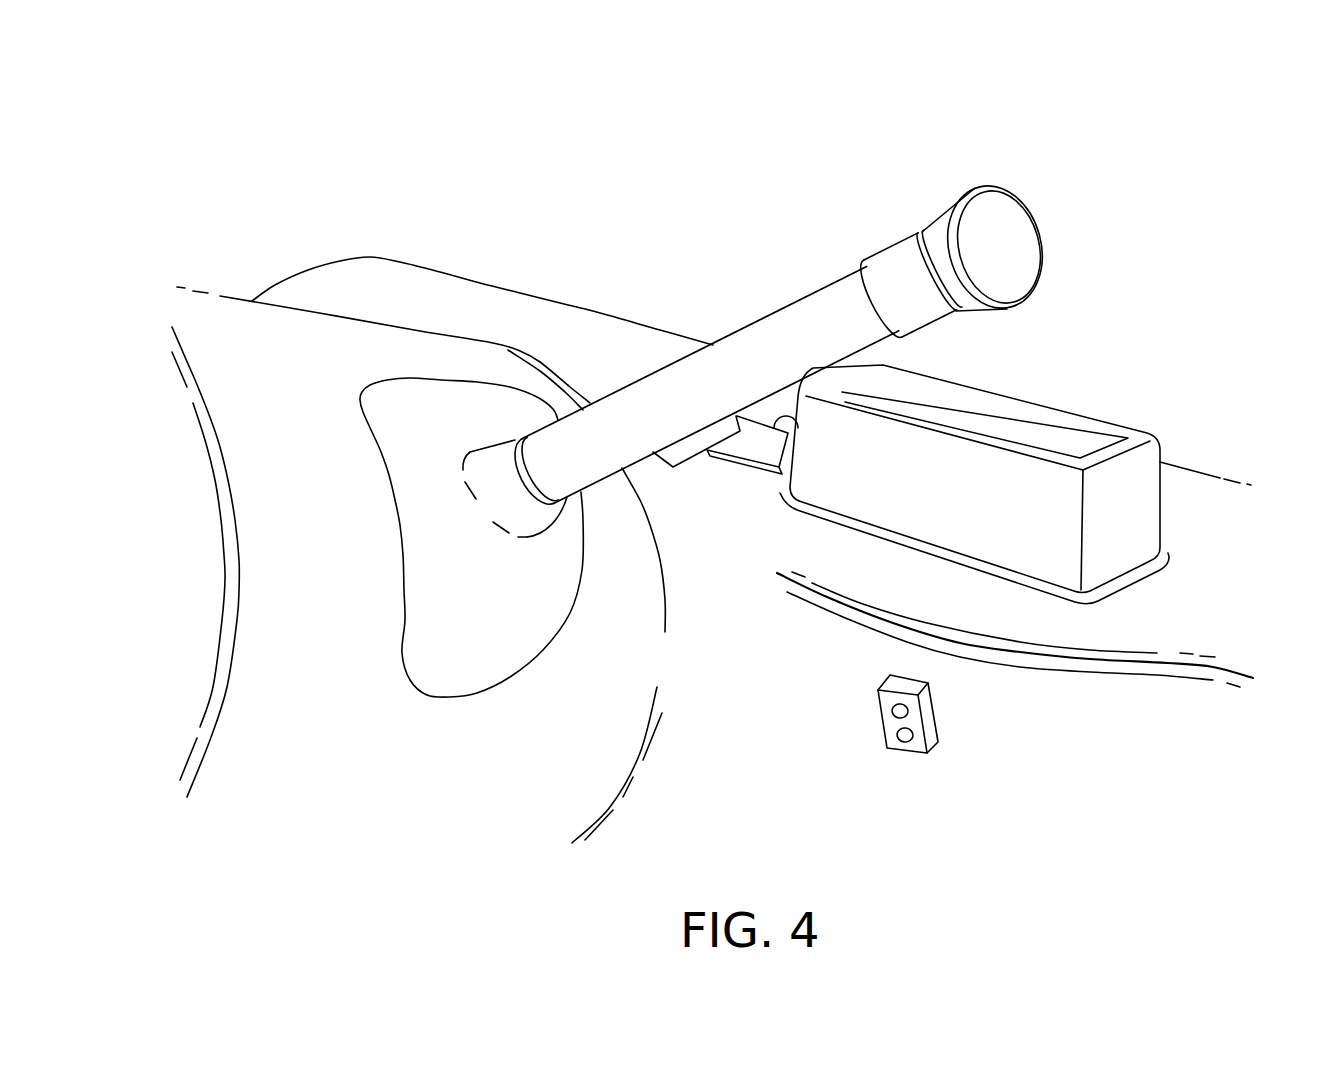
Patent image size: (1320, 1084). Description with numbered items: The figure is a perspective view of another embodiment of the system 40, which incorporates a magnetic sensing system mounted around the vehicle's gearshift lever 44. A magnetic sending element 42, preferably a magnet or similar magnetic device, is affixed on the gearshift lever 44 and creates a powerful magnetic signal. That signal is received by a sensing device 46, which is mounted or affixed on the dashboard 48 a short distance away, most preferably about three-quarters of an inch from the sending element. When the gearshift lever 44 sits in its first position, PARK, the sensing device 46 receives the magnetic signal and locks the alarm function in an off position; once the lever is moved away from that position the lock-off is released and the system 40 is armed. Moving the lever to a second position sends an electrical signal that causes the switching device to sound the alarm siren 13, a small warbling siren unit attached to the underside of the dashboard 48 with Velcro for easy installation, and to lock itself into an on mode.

The system 40 is at (798, 307).
The gearshift lever 44 is at (779, 320).
The magnetic sending element 42 is at (685, 445).
The sensing device 46 is at (747, 452).
The dashboard 48 is at (977, 417).
The alarm siren 13 is at (893, 754).